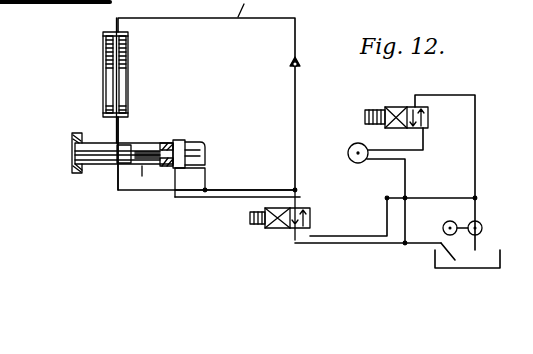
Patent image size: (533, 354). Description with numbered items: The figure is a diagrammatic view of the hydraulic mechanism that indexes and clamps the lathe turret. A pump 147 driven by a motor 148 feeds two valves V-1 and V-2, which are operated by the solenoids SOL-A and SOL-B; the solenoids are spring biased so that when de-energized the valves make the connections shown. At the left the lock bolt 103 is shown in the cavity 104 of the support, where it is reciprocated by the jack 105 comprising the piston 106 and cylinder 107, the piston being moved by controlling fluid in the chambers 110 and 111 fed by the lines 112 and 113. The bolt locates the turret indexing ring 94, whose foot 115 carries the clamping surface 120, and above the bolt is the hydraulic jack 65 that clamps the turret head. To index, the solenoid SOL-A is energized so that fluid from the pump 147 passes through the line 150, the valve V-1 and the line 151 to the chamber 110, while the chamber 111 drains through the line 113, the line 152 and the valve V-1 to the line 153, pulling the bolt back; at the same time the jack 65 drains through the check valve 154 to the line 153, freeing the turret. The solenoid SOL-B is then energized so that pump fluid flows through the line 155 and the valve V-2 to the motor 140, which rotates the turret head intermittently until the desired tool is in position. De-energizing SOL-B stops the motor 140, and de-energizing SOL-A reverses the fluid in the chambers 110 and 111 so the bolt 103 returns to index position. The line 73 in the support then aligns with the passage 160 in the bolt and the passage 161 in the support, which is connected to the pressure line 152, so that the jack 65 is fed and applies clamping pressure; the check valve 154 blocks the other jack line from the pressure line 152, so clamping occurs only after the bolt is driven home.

The hydraulic jack 65 is at (104, 36).
The line 73 is at (116, 128).
The indexing ring 94 is at (76, 171).
The lock bolt 103 is at (100, 166).
The cavity 104 is at (148, 163).
The jack 105 is at (179, 140).
The piston 106 is at (191, 146).
The cylinder 107 is at (208, 152).
The chamber 110 is at (166, 142).
The chamber 111 is at (207, 160).
The line 112 is at (175, 193).
The line 113 is at (207, 180).
The foot 115 is at (80, 132).
The clamping surface 120 is at (78, 134).
The motor 140 is at (353, 147).
The pump 147 is at (483, 228).
The motor 148 is at (444, 225).
The line 150 is at (341, 232).
The line 151 is at (210, 203).
The pressure line 152 is at (253, 192).
The line 153 is at (356, 249).
The check valve 154 is at (291, 62).
The line 155 is at (477, 120).
The passage 160 is at (123, 153).
The passage 161 is at (117, 180).
The valve V-1 is at (280, 236).
The valve V-2 is at (402, 101).
The solenoid SOL-A is at (253, 224).
The solenoid SOL-B is at (368, 110).